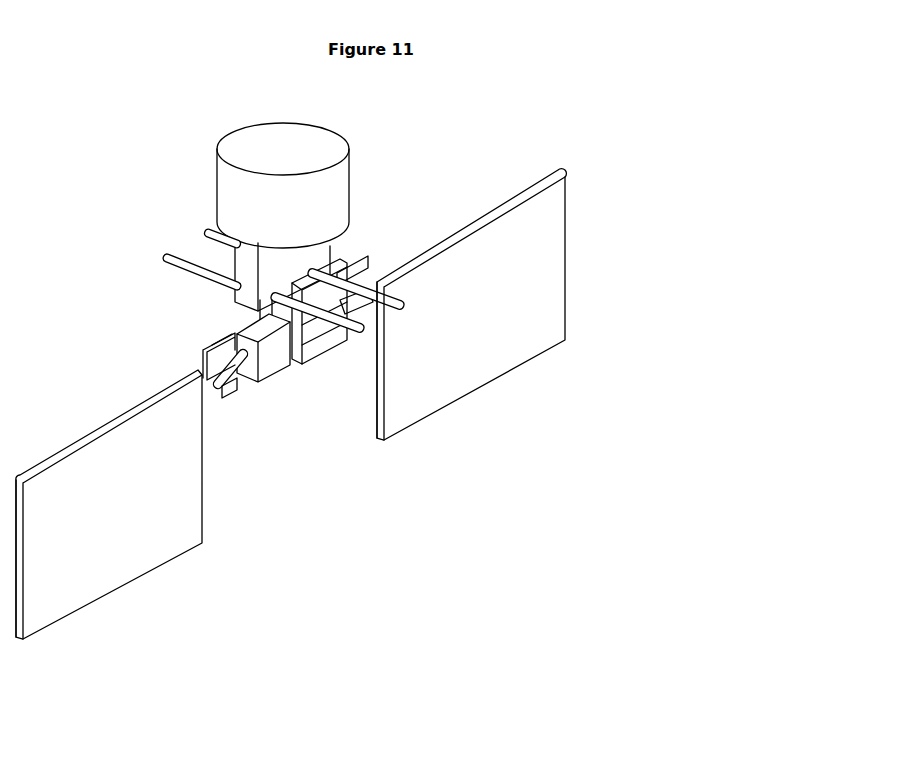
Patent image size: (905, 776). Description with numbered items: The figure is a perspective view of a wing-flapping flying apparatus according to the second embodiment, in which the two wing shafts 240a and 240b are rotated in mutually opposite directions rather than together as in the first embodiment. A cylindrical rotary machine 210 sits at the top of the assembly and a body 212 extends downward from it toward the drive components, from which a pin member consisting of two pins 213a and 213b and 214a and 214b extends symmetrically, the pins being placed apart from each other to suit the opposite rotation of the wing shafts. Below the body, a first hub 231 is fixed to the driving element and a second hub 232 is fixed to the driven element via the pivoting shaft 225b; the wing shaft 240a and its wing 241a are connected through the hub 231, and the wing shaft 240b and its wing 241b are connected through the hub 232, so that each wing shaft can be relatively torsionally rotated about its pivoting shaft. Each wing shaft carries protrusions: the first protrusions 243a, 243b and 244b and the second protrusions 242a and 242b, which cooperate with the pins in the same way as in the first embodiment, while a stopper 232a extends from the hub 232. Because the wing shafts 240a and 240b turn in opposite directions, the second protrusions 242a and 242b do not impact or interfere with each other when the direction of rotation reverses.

The motor 210 is at (285, 140).
The motor shaft housing 212 is at (246, 258).
The pin 213a is at (390, 297).
The pin 213b is at (210, 231).
The pin 214a is at (330, 336).
The pin 214b is at (170, 268).
The pivoting shaft 225b is at (260, 316).
The first hub 231 is at (308, 352).
The second hub 232 is at (272, 380).
The stopper 232a is at (243, 388).
The wing shaft 240a is at (520, 194).
The wing shaft 240b is at (72, 450).
The wing 241a is at (492, 368).
The wing 241b is at (128, 570).
The second protrusion 242a is at (355, 268).
The second protrusion 242b is at (217, 346).
The first protrusion 243a is at (358, 314).
The first protrusion 243b is at (203, 363).
The first protrusion 244b is at (215, 398).